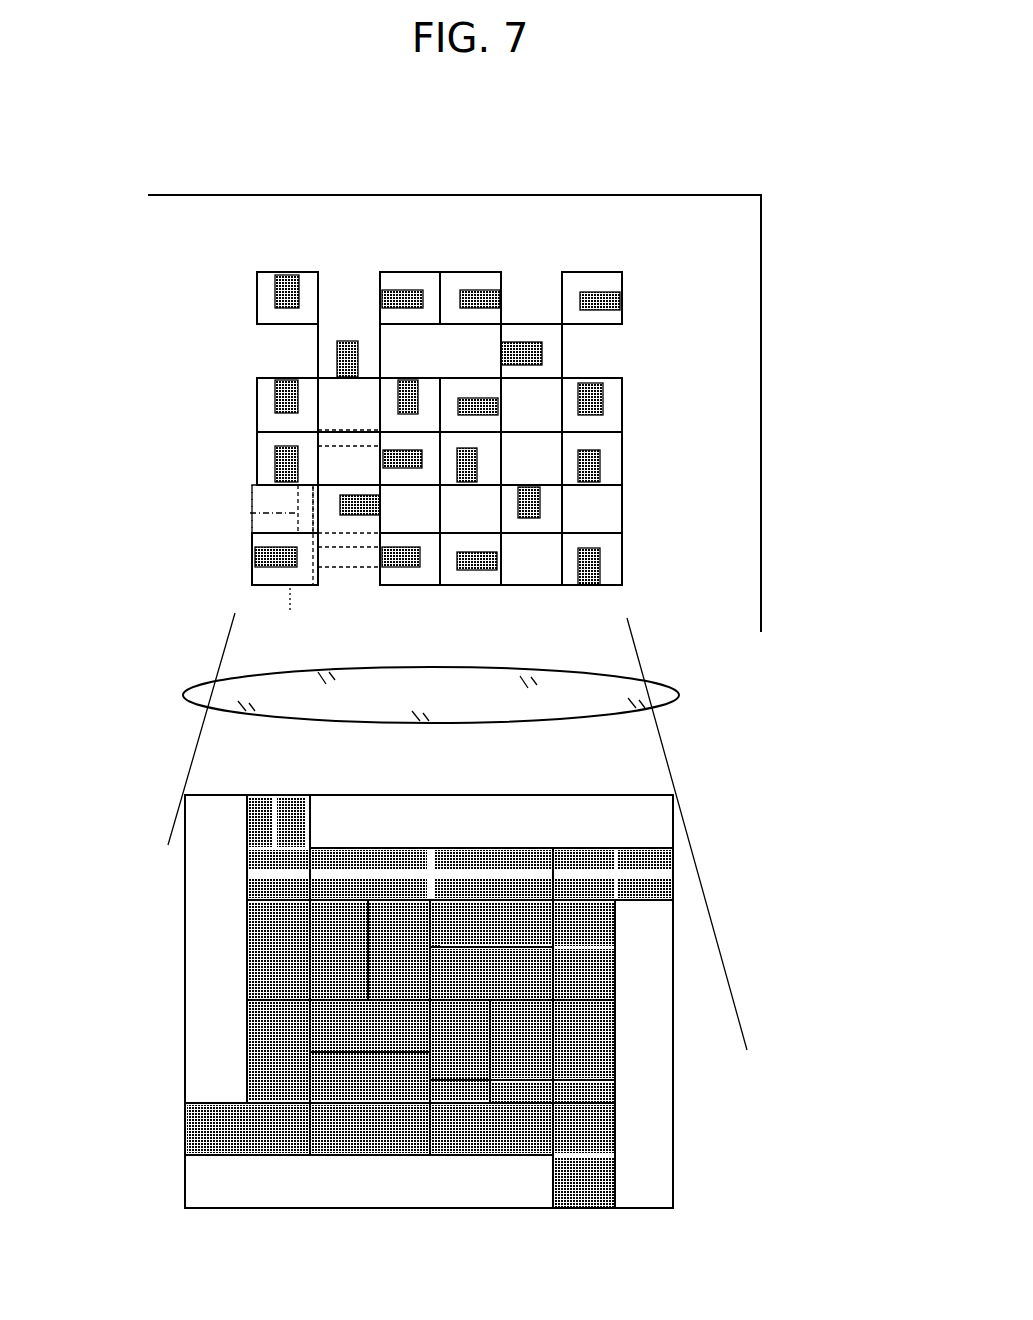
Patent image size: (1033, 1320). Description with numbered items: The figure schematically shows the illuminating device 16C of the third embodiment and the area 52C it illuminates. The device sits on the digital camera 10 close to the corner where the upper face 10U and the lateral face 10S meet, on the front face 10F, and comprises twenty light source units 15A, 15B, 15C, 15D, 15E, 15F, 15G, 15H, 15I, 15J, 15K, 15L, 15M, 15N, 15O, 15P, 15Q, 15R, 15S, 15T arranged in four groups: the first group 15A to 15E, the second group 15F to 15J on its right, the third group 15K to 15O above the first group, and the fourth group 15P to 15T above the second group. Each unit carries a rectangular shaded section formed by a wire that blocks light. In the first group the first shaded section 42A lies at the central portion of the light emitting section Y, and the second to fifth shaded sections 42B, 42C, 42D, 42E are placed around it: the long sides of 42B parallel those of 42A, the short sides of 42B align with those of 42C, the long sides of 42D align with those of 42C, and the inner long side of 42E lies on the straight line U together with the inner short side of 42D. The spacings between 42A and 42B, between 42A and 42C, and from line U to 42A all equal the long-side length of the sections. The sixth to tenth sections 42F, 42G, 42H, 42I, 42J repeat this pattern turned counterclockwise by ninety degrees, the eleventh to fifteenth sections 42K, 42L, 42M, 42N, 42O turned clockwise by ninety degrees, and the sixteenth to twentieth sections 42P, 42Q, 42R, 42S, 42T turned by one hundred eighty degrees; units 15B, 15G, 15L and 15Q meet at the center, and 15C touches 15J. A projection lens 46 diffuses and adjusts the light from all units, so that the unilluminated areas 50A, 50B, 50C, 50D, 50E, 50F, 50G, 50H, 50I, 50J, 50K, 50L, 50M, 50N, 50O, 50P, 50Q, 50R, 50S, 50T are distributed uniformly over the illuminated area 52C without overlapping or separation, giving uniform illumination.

The digital camera 10 is at (784, 240).
The upper face 10U is at (643, 195).
The lateral face 10S is at (762, 406).
The front face 10F is at (748, 553).
The illuminating device 16C is at (748, 334).
The first light source unit 15A is at (308, 493).
The second light source unit 15B is at (378, 442).
The third light source unit 15C is at (432, 587).
The fourth light source unit 15D is at (253, 578).
The fifth light source unit 15E is at (253, 438).
The sixth light source unit 15F is at (565, 497).
The seventh light source unit 15G is at (486, 487).
The eighth light source unit 15H is at (625, 440).
The ninth light source unit 15I is at (625, 536).
The tenth light source unit 15J is at (503, 584).
The eleventh light source unit 15K is at (316, 338).
The twelfth light source unit 15L is at (378, 405).
The thirteenth light source unit 15M is at (255, 396).
The fourteenth light source unit 15N is at (270, 272).
The fifteenth light source unit 15O is at (428, 272).
The sixteenth light source unit 15P is at (565, 340).
The seventeenth light source unit 15Q is at (505, 388).
The eighteenth light source unit 15R is at (497, 272).
The nineteenth light source unit 15S is at (624, 281).
The twentieth light source unit 15T is at (625, 384).
The first shaded section 42A is at (372, 513).
The second shaded section 42B is at (385, 467).
The third shaded section 42C is at (401, 569).
The fourth shaded section 42D is at (258, 551).
The fifth shaded section 42E is at (275, 458).
The sixth shaded section 42F is at (540, 515).
The seventh shaded section 42G is at (478, 466).
The eighth shaded section 42H is at (601, 462).
The ninth shaded section 42I is at (601, 567).
The tenth shaded section 42J is at (471, 572).
The eleventh shaded section 42K is at (347, 341).
The twelfth shaded section 42L is at (418, 393).
The thirteenth shaded section 42M is at (275, 386).
The fourteenth shaded section 42N is at (275, 291).
The fifteenth shaded section 42O is at (384, 292).
The sixteenth shaded section 42P is at (528, 342).
The seventeenth shaded section 42Q is at (498, 414).
The eighteenth shaded section 42R is at (470, 292).
The nineteenth shaded section 42S is at (592, 292).
The twentieth shaded section 42T is at (603, 400).
The projection lens 46 is at (680, 697).
The illuminated area 52C is at (650, 748).
The first unilluminated area 50A is at (247, 1092).
The second unilluminated area 50B is at (247, 1045).
The third unilluminated area 50C is at (310, 1157).
The fourth unilluminated area 50D is at (185, 1115).
The fifth unilluminated area 50E is at (247, 1012).
The sixth unilluminated area 50F is at (553, 1045).
The seventh unilluminated area 50G is at (553, 1086).
The eighth unilluminated area 50H is at (600, 1020).
The ninth unilluminated area 50I is at (608, 1183).
The tenth unilluminated area 50J is at (600, 1140).
The eleventh unilluminated area 50K is at (332, 853).
The twelfth unilluminated area 50L is at (420, 880).
The thirteenth unilluminated area 50M is at (247, 930).
The fourteenth unilluminated area 50N is at (247, 838).
The fifteenth unilluminated area 50O is at (393, 850).
The sixteenth unilluminated area 50P is at (547, 918).
The seventeenth unilluminated area 50Q is at (547, 953).
The eighteenth unilluminated area 50R is at (502, 850).
The nineteenth unilluminated area 50S is at (630, 850).
The twentieth unilluminated area 50T is at (564, 850).
The straight line U is at (259, 518).
The second light emitting section Y is at (287, 612).